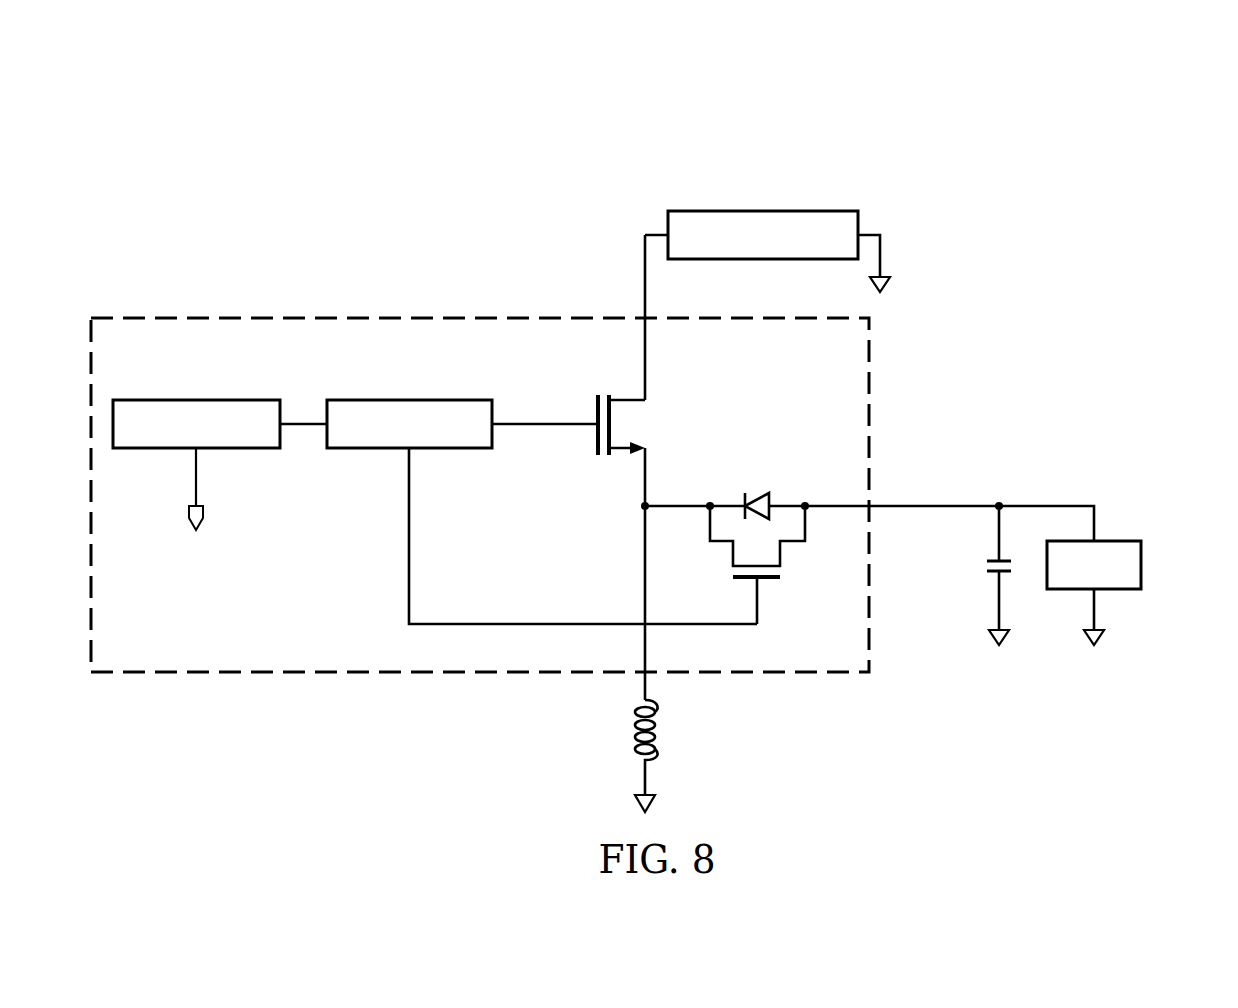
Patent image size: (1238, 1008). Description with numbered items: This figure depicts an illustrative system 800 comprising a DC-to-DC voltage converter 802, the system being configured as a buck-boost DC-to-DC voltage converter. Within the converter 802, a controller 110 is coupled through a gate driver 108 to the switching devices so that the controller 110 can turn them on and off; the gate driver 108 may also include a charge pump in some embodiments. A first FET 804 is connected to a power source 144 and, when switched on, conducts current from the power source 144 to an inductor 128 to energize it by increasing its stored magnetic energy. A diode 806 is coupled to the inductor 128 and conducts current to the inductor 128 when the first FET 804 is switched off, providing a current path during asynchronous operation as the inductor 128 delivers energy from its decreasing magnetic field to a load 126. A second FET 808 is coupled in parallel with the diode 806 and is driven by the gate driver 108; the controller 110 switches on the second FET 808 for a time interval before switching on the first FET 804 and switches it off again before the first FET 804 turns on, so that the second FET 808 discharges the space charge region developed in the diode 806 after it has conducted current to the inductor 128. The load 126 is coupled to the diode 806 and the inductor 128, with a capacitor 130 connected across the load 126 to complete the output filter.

The system 800 is at (212, 99).
The DC-to-DC voltage converter 802 is at (319, 311).
The power source 144 is at (764, 211).
The controller 110 is at (171, 400).
The gate driver 108 is at (386, 400).
The first FET 804 is at (598, 408).
The diode 806 is at (756, 497).
The second FET 808 is at (771, 580).
The inductor 128 is at (656, 735).
The capacitor 130 is at (987, 567).
The load 126 is at (1141, 565).